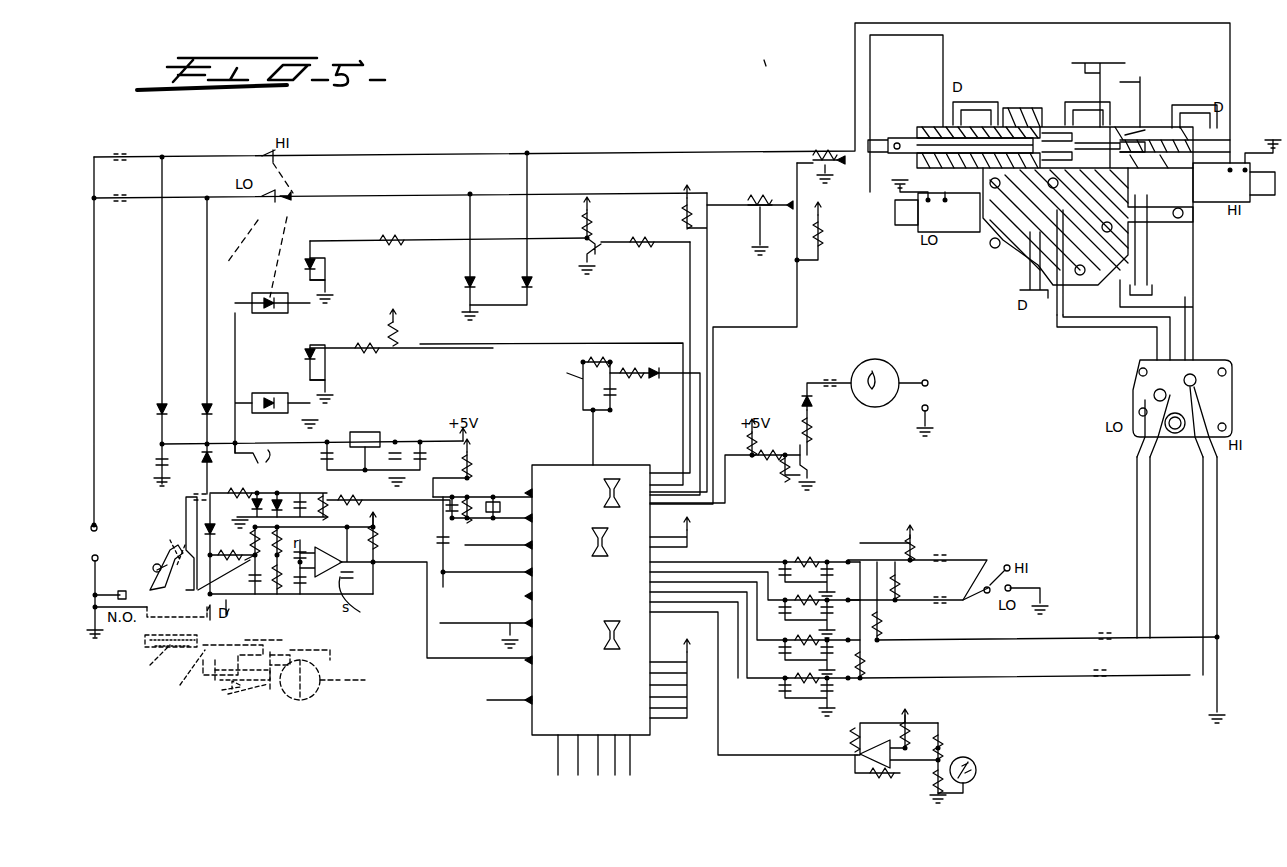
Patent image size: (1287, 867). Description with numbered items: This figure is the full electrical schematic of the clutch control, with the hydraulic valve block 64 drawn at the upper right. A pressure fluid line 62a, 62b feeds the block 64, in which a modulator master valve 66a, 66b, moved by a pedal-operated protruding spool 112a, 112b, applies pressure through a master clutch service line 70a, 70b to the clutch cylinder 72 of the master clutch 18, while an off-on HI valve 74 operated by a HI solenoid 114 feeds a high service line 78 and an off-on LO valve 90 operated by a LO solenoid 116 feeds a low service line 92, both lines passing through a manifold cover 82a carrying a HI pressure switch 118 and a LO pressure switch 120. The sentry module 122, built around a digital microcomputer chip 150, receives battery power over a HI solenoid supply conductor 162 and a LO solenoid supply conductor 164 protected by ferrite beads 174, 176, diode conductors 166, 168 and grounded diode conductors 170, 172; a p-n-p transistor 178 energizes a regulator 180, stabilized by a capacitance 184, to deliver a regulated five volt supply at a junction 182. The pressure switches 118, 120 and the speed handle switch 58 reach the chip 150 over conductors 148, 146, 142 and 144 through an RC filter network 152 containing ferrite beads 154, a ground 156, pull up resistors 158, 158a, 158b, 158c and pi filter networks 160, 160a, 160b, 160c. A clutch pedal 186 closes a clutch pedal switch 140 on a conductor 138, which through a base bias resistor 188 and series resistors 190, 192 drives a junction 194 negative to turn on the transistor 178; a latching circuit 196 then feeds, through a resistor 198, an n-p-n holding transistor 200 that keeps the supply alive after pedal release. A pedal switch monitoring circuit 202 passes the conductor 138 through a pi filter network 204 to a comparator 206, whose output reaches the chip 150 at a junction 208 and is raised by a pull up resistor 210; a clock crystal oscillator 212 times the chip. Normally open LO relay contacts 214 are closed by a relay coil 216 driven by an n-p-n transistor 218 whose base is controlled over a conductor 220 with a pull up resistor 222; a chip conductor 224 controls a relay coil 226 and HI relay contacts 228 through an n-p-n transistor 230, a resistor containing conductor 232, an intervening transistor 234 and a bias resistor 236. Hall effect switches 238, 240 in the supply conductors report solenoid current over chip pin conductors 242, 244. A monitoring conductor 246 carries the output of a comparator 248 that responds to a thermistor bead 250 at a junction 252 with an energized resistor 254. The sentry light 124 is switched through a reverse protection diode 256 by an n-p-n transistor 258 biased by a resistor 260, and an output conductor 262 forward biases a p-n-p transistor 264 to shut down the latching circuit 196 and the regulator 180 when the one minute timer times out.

The master clutch 18 is at (280, 640).
The speed handle switch 58 is at (1032, 580).
The pressure fluid line 62a is at (1140, 82).
The pressure fluid line 62b is at (222, 630).
The common valve block 64 is at (1014, 101).
The modulator master valve 66a is at (1140, 132).
The modulator master valve 66b is at (216, 681).
The master clutch service line 70a is at (1077, 65).
The master clutch service line 70b is at (262, 699).
The clutch cylinder 72 is at (295, 710).
The off-on HI valve 74 is at (1115, 177).
The high service line 78 is at (1198, 305).
The manifold cover 82a is at (1228, 388).
The off-on LO valve 90 is at (1010, 253).
The low service line 92 is at (1098, 332).
The pedal-operated protruding spool 112a is at (897, 142).
The pedal-operated protruding spool 112b is at (141, 666).
The HI solenoid 114 is at (1238, 202).
The LO solenoid 116 is at (913, 238).
The pressure switch 118 is at (1195, 373).
The low pressure switch 120 is at (1150, 390).
The sentry module 122 is at (440, 197).
The instrument panel sentry light 124 is at (888, 350).
The interconnecting conductor 138 is at (178, 545).
The clutch pedal switch 140 is at (113, 586).
The conductor 142 is at (970, 560).
The conductor 144 is at (1008, 568).
The low pressure conductor 146 is at (973, 640).
The high pressure conductor 148 is at (1008, 678).
The digital microcomputer chip 150 is at (637, 730).
The RC filter network 152 is at (812, 515).
The ferrite beads 154 is at (1106, 648).
The ground 156 is at (1219, 692).
The switch pull up resistor 158 is at (870, 662).
The pull up resistor 158a is at (888, 625).
The pull up resistor 158b is at (899, 590).
The pull up resistor 158c is at (913, 562).
The pi filter network 160 is at (808, 687).
The pi filter network 160a is at (790, 652).
The pi filter network 160b is at (793, 612).
The pi filter network 160c is at (786, 561).
The HI solenoid supply conductor 162 is at (360, 155).
The LO solenoid supply conductor 164 is at (347, 196).
The diode conductor 166 is at (165, 367).
The diode conductor 168 is at (206, 378).
The grounded diode conductor 170 is at (470, 253).
The grounded diode conductor 172 is at (530, 270).
The ferrite bead 174 is at (128, 155).
The ferrite bead 176 is at (124, 204).
The p-n-p transistor 178 is at (330, 496).
The regulator 180 is at (354, 432).
The junction 182 is at (435, 433).
The capacitance 184 is at (368, 470).
The clutch pedal 186 is at (170, 535).
The base bias resistor 188 is at (255, 439).
The resistor 190 is at (299, 496).
The resistor 192 is at (182, 465).
The junction 194 is at (295, 438).
The +5 V latching circuit 196 is at (417, 476).
The resistor 198 is at (390, 582).
The n-p-n holding transistor 200 is at (227, 496).
The pedal switch monitoring circuit 202 is at (193, 484).
The pi filter network 204 is at (176, 625).
The comparator 206 is at (344, 585).
The junction 208 is at (380, 572).
The pull up resistor 210 is at (285, 545).
The clock crystal oscillator 212 is at (495, 498).
The power relay LO contacts 214 is at (262, 199).
The relay coil 216 is at (275, 392).
The n-p-n transistor 218 is at (330, 388).
The interconnecting conductor 220 is at (532, 343).
The pull up resistor 222 is at (398, 338).
The chip conductor 224 is at (690, 306).
The relay coil 226 is at (268, 292).
The HI relay contacts 228 is at (267, 153).
The n-p-n transistor 230 is at (326, 284).
The resistor containing conductor 232 is at (427, 242).
The n-p-n transistor 234 is at (592, 238).
The resistor 236 is at (630, 250).
The Hall effect switch 238 is at (752, 215).
The Hall effect switch 240 is at (810, 150).
The chip pin conductor 242 is at (712, 316).
The chip pin conductor 244 is at (811, 315).
The monitoring conductor 246 is at (760, 760).
The comparator 248 is at (860, 765).
The negative coefficient thermistor bead 250 is at (979, 770).
The junction 252 is at (940, 743).
The energized resistor 254 is at (908, 725).
The reverse protection diode 256 is at (802, 398).
The n-p-n transistor 258 is at (814, 446).
The resistor 260 is at (755, 460).
The output conductor 262 is at (662, 368).
The p-n-p transistor 264 is at (572, 375).